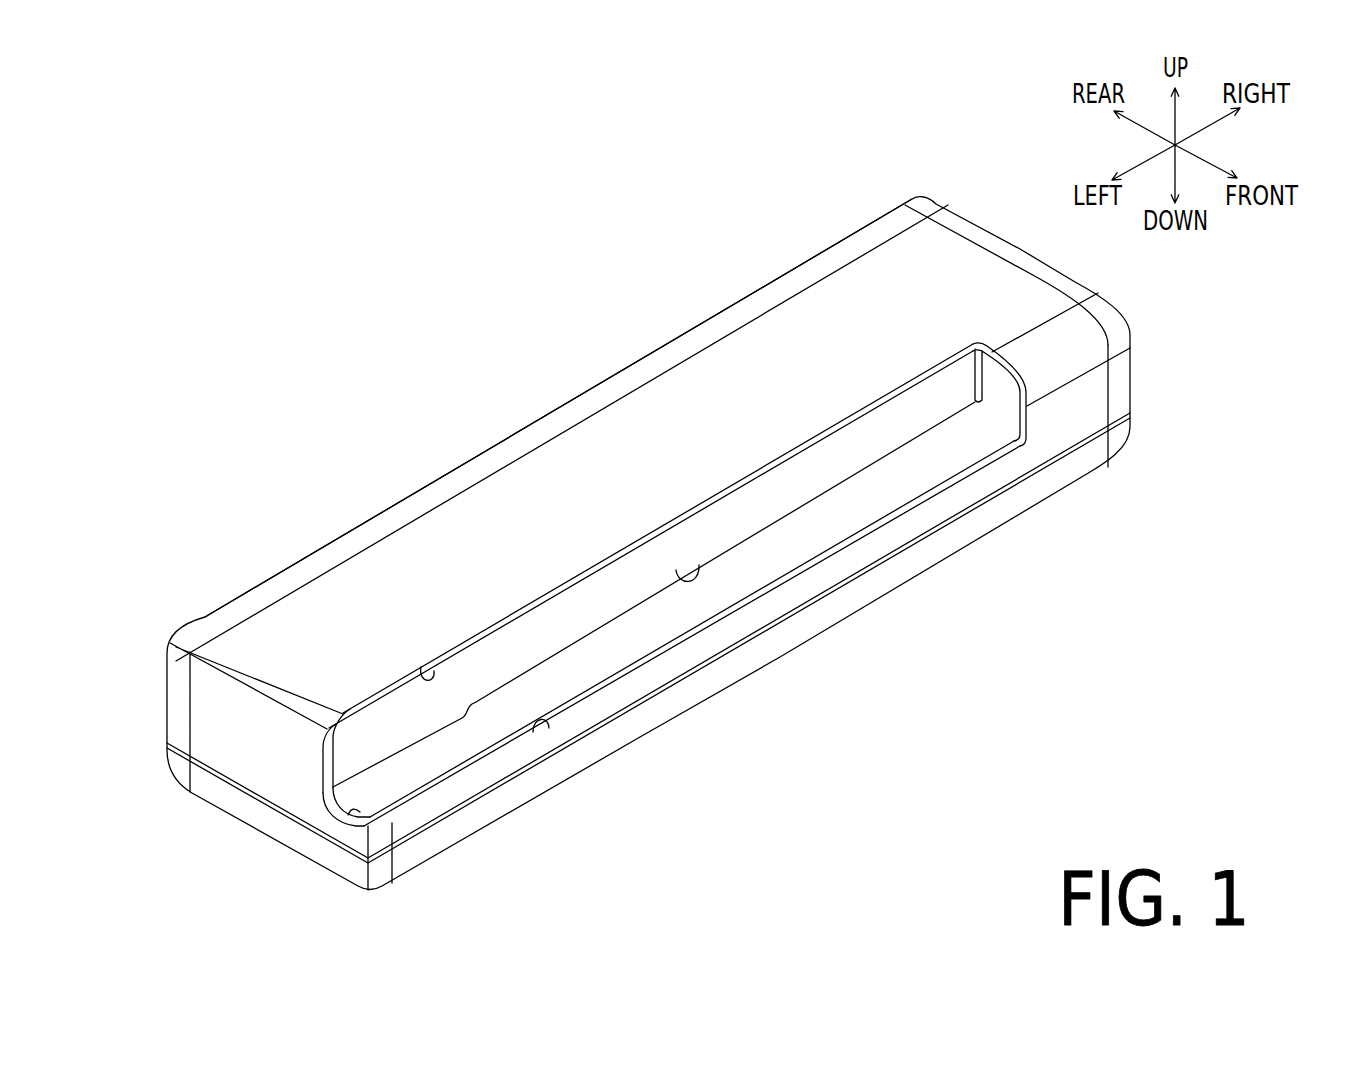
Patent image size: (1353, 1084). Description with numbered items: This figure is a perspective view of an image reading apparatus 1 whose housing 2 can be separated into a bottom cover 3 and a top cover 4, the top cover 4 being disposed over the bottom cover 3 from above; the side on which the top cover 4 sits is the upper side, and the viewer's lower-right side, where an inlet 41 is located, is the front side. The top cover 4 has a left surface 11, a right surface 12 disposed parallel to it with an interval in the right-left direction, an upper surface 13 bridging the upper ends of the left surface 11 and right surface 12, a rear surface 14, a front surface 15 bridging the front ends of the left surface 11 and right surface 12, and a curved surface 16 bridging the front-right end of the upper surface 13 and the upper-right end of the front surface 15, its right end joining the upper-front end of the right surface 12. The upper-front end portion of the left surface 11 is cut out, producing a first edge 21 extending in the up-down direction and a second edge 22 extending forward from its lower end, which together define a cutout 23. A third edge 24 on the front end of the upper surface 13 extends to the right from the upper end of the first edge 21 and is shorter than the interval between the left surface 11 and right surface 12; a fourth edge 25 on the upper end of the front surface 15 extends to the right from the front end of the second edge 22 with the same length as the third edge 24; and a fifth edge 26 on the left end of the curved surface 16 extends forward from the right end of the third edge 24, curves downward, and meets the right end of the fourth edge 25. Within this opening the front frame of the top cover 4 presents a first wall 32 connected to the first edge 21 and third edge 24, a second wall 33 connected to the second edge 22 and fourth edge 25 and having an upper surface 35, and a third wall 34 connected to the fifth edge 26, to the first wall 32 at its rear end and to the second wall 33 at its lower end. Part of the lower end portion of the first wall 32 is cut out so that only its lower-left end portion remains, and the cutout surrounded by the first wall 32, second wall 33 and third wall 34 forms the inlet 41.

The image reading apparatus 1 is at (651, 524).
The housing 2 is at (934, 172).
The bottom cover 3 is at (1145, 447).
The top cover 4 is at (1141, 302).
The left surface 11 is at (175, 709).
The right surface 12 is at (1075, 280).
The upper surface 13 is at (452, 523).
The rear surface 14 is at (618, 367).
The front surface 15 is at (742, 630).
The curved surface 16 is at (1112, 344).
The first edge 21 is at (332, 757).
The second edge 22 is at (352, 813).
The cutout 23 is at (320, 817).
The third edge 24 is at (438, 669).
The fourth edge 25 is at (541, 732).
The fifth edge 26 is at (1013, 401).
The first wall 32 is at (418, 722).
The second wall 33 is at (826, 528).
The third wall 34 is at (997, 401).
The upper surface of the second wall 35 is at (777, 571).
The inlet 41 is at (697, 566).